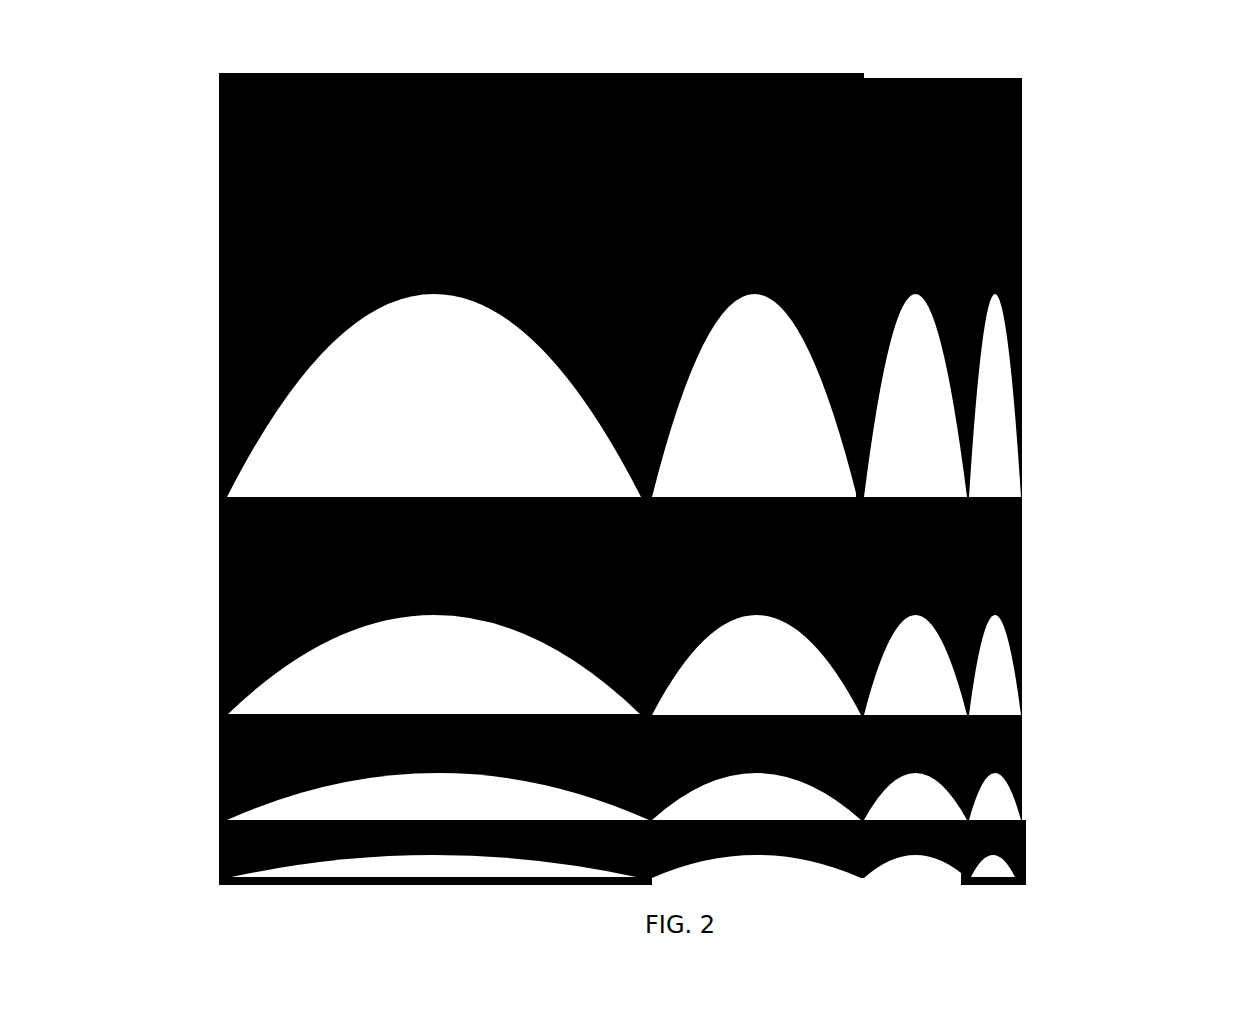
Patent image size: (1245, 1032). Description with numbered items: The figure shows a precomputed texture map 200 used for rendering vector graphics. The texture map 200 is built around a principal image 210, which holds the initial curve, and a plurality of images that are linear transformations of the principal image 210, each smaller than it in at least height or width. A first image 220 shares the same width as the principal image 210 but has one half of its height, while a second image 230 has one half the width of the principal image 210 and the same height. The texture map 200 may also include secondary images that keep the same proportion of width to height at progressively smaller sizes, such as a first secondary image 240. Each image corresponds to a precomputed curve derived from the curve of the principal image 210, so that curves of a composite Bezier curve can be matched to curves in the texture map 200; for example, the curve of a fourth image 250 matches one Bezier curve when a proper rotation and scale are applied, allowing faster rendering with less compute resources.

The precomputed texture map 200 is at (1162, 468).
The principal image 210 is at (221, 287).
The first image 220 is at (221, 650).
The second image 230 is at (683, 73).
The first secondary image 240 is at (1024, 830).
The fourth image 250 is at (220, 853).